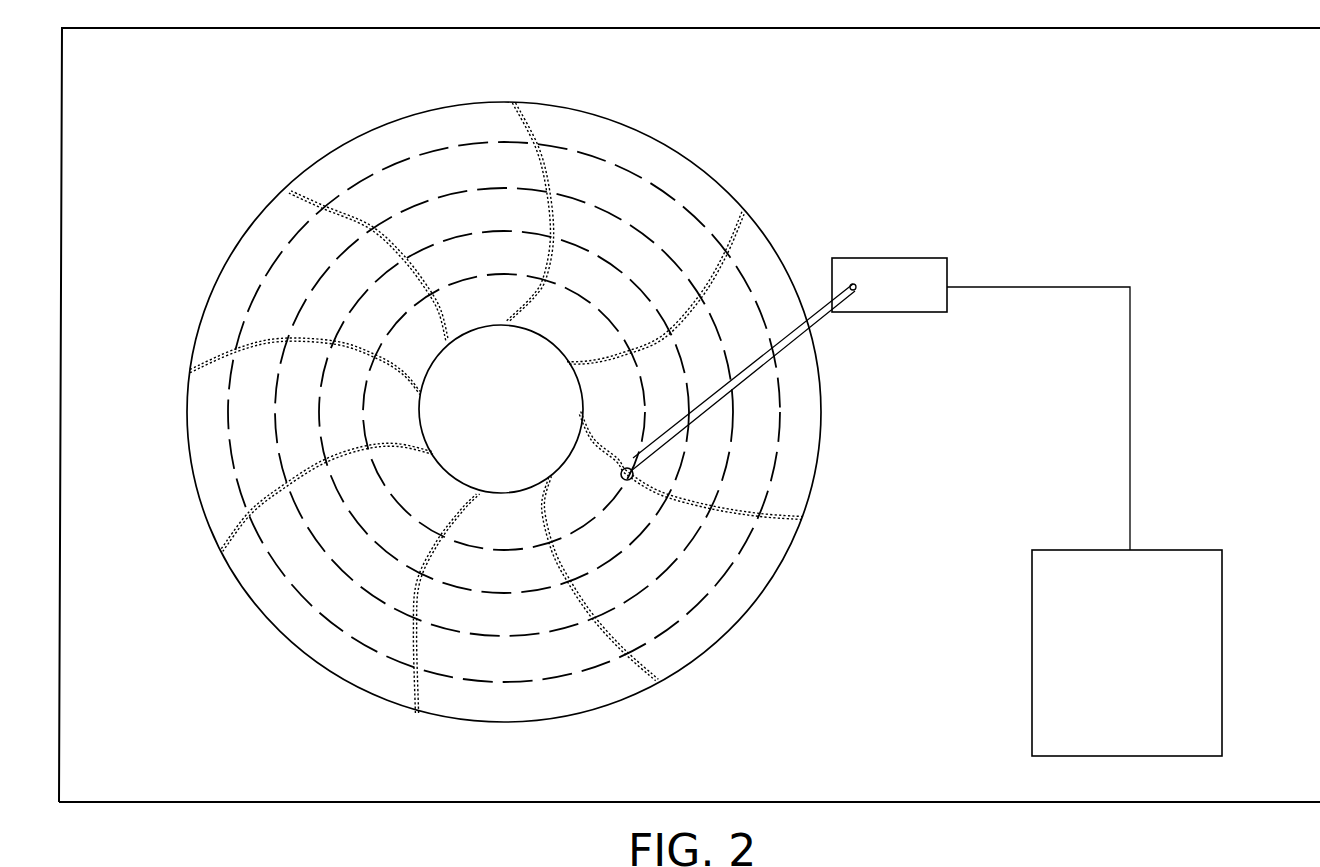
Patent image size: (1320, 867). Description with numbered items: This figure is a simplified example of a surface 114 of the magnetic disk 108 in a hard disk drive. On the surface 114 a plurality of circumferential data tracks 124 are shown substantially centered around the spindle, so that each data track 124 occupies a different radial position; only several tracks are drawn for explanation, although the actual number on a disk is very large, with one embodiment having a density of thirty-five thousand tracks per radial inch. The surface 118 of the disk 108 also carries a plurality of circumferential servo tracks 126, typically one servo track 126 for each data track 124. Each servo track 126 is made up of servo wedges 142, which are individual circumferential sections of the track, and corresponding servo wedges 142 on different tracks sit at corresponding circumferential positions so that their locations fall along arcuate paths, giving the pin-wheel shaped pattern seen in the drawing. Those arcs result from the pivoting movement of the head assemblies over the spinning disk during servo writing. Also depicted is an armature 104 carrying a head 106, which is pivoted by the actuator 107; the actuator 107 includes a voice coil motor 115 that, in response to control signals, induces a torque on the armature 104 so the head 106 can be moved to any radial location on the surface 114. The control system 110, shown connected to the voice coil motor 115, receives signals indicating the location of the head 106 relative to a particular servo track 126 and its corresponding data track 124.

The armature 104 is at (753, 373).
The head 106 is at (633, 474).
The actuator 107 is at (853, 292).
The magnetic disk 108 is at (188, 388).
The control system 110 is at (1190, 617).
The disk surface 114 is at (367, 573).
The voice coil motor 115 is at (918, 265).
The surface of the disk 118 is at (297, 443).
The data track 124 is at (328, 337).
The servo track 126 is at (370, 227).
The servo wedge 142 is at (538, 138).